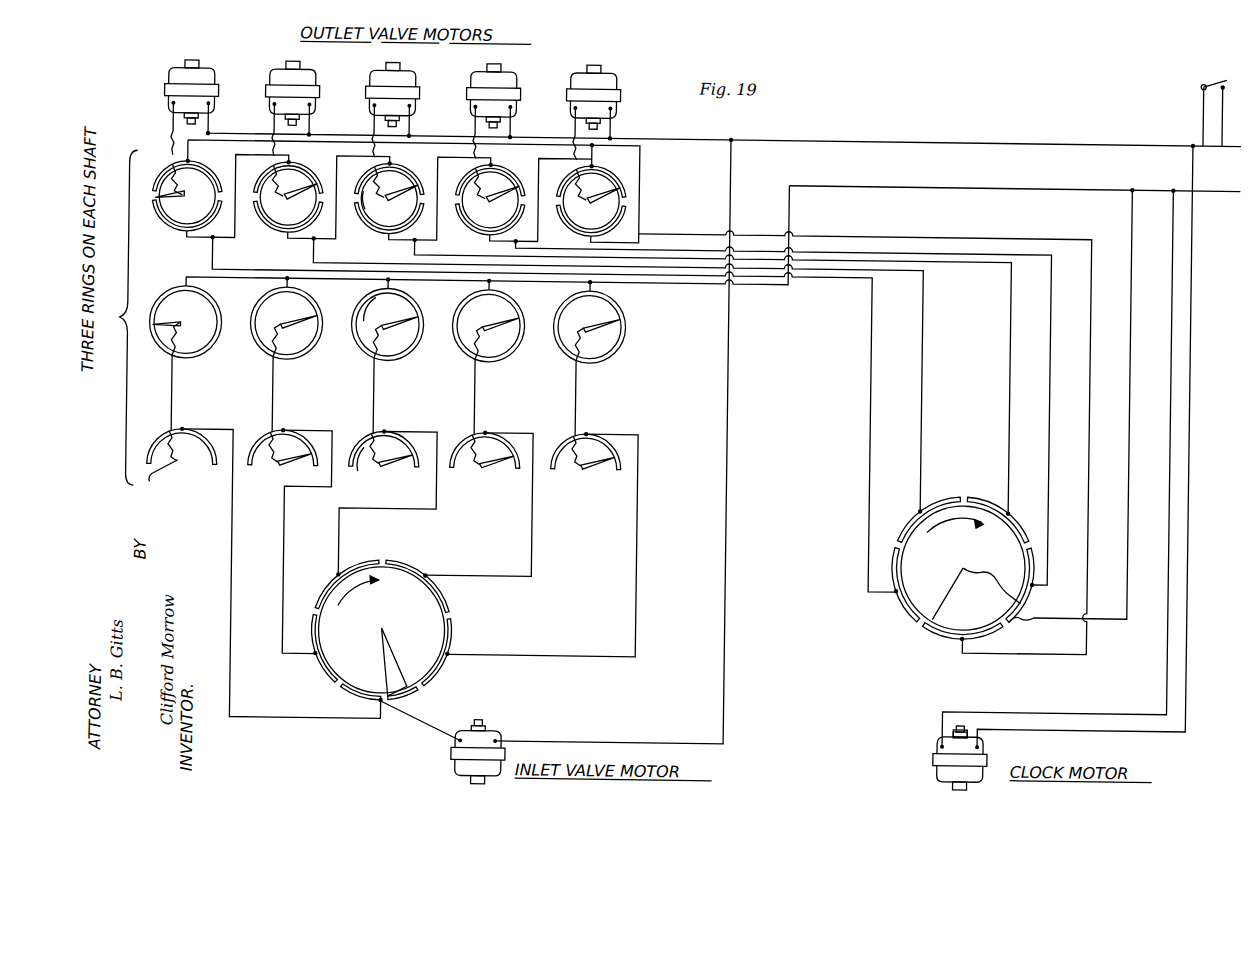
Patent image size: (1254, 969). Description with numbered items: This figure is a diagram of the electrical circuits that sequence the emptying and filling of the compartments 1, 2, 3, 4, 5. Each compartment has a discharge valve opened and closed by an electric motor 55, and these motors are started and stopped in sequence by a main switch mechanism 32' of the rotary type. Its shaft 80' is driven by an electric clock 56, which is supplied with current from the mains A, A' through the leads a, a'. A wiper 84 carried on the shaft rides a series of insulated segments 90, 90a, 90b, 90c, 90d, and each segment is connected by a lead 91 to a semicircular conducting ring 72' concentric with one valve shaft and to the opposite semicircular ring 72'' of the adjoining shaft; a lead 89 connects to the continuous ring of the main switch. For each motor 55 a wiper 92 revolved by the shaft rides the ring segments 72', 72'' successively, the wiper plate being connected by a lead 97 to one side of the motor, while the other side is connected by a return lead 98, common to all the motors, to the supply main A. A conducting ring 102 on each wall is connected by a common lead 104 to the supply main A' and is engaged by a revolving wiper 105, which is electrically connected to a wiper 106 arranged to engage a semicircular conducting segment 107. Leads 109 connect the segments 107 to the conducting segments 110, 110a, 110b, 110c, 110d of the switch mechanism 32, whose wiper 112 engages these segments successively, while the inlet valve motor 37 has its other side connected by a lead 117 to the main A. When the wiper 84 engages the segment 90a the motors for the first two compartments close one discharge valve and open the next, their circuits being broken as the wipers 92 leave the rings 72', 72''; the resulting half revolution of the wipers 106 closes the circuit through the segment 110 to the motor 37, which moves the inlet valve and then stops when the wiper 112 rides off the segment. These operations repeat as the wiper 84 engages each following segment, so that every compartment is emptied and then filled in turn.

The compartment 1 is at (191, 84).
The compartment 2 is at (292, 84).
The compartment 3 is at (392, 86).
The compartment 4 is at (493, 89).
The compartment 5 is at (593, 89).
The electric motor 55 is at (376, 85).
The lead 97 is at (172, 130).
The return lead 98 is at (698, 140).
The supply main A is at (1216, 129).
The supply main A' is at (1014, 202).
The lead a is at (1080, 469).
The lead a' is at (1100, 446).
The semi-circular conducting ring 72'' is at (410, 165).
The semicircular conducting ring 72' is at (410, 227).
The wiper 92 is at (388, 196).
The lead 91 is at (872, 437).
The lead 104 is at (226, 282).
The conducting ring 102 is at (194, 363).
The wiper 105 is at (631, 309).
The semi-circular conducting segment 107 is at (166, 456).
The wiper 106 is at (393, 484).
The lead 109 is at (237, 552).
The switch mechanism 32 is at (404, 631).
The conducting segment 110 is at (351, 697).
The conducting segment 110a is at (309, 648).
The conducting segment 110b is at (329, 584).
The conducting segment 110c is at (417, 575).
The conducting segment 110d is at (467, 652).
The wiper 112 is at (403, 656).
The motor 37 is at (498, 735).
The lead 117 is at (731, 622).
The main switch mechanism 32' is at (948, 568).
The segment 90 is at (957, 643).
The segment 90a is at (872, 584).
The segment 90b is at (916, 516).
The segment 90c is at (998, 506).
The segment 90d is at (1039, 585).
The wiper 84 is at (969, 593).
The lead 89 is at (1131, 598).
The electric clock 56 is at (940, 761).
The shaft 80' is at (981, 709).